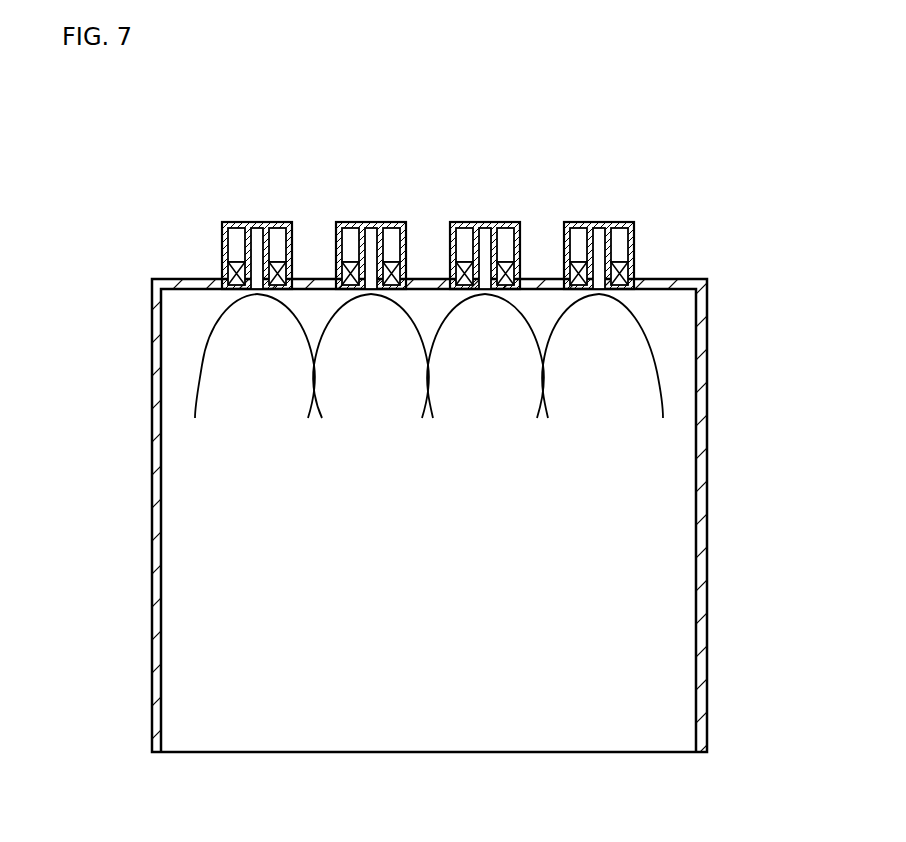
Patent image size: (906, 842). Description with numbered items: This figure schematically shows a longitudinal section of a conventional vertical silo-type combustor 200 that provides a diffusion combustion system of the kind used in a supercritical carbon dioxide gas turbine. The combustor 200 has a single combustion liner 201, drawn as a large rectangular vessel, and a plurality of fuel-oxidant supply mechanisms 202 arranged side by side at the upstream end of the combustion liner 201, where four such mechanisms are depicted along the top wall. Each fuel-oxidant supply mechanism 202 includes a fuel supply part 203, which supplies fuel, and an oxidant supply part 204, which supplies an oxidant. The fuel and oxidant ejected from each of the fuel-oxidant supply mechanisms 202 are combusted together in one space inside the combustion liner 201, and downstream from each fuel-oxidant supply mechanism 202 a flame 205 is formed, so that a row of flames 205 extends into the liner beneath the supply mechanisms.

The vertical silo-type combustor 200 is at (412, 434).
The combustion liner 201 is at (152, 483).
The fuel-oxidant supply mechanism 202 is at (415, 202).
The fuel supply part 203 is at (282, 226).
The oxidant supply part 204 is at (226, 224).
The flame 205 is at (196, 400).